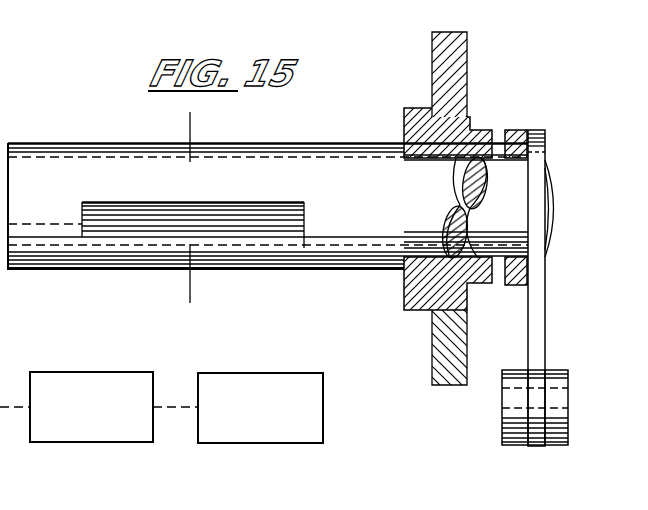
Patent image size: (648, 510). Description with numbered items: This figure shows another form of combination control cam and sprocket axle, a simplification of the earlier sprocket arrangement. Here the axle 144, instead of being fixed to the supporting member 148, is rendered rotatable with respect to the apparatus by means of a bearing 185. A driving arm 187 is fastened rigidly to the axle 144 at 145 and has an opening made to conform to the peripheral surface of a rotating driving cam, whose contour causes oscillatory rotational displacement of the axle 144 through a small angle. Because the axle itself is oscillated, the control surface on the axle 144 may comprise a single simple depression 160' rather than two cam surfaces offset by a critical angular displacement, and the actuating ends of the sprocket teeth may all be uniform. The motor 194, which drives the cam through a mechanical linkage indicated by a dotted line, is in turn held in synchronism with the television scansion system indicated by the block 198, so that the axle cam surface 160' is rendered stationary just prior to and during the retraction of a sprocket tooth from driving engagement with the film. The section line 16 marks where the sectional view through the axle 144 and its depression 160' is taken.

The section line 16 is at (188, 127).
The axle 144 is at (332, 157).
The fastening point 145 is at (552, 185).
The supporting member 148 is at (468, 60).
The single simple depression 160' is at (193, 211).
The bearing 185 is at (471, 128).
The driving arm 187 is at (547, 300).
The motor 194 is at (108, 372).
The television scansion system 198 is at (253, 373).